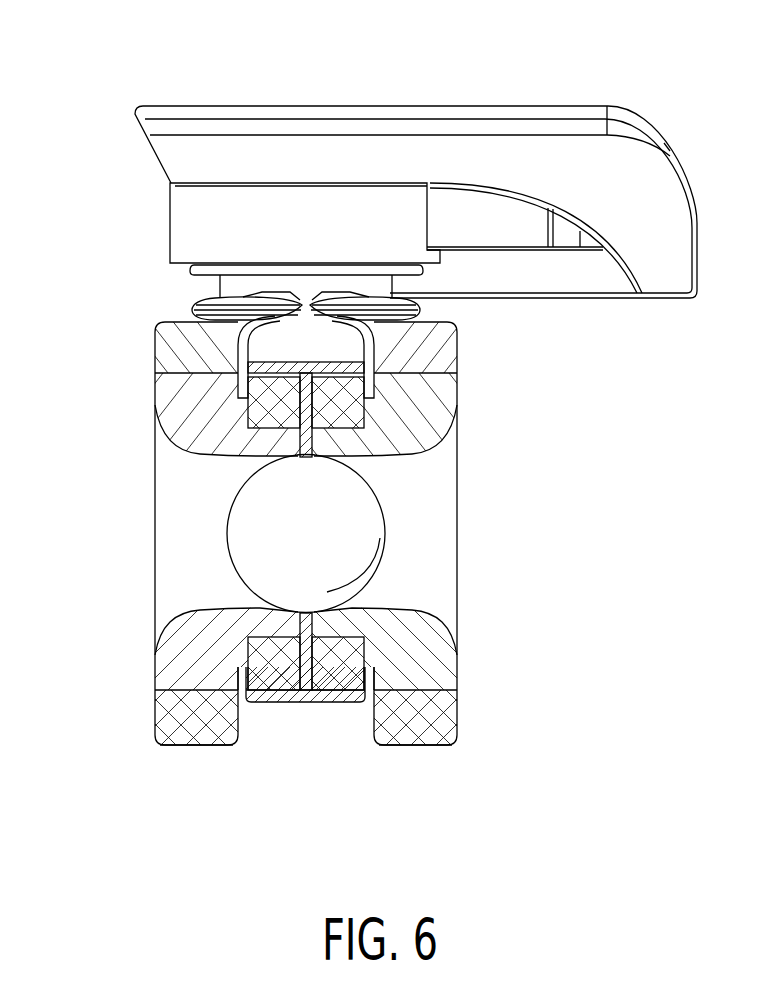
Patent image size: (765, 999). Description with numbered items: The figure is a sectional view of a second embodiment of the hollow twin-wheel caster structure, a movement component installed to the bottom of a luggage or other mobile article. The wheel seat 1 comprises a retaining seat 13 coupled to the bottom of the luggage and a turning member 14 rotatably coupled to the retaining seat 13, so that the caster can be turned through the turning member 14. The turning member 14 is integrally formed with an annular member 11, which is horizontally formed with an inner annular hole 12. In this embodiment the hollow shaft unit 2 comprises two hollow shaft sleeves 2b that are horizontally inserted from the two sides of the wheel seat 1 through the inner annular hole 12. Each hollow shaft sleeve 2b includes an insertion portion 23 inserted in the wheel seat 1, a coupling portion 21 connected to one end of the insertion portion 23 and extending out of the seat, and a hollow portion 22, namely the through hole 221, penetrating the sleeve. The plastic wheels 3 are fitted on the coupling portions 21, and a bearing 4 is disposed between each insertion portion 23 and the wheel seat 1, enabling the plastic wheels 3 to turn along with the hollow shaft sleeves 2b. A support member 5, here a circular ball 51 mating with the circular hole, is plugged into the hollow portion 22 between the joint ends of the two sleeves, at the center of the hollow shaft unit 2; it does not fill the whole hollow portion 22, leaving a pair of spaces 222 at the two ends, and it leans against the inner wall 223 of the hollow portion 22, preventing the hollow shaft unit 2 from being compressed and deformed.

The wheel seat 1 is at (533, 105).
The annular member 11 is at (297, 367).
The inner annular hole 12 is at (317, 363).
The retaining seat 13 is at (437, 148).
The turning member 14 is at (200, 203).
The hollow shaft unit 2 is at (305, 556).
The coupling portion 21 is at (180, 685).
The hollow portion 22 is at (173, 474).
The through hole 221 is at (173, 530).
The space 222 is at (175, 578).
The inner wall 223 is at (297, 615).
The insertion portion 23 is at (270, 630).
The hollow shaft sleeve 2b is at (197, 623).
The plastic wheel 3 is at (167, 715).
The bearing 4 is at (200, 740).
The support member 5 is at (378, 495).
The circular ball 51 is at (353, 565).